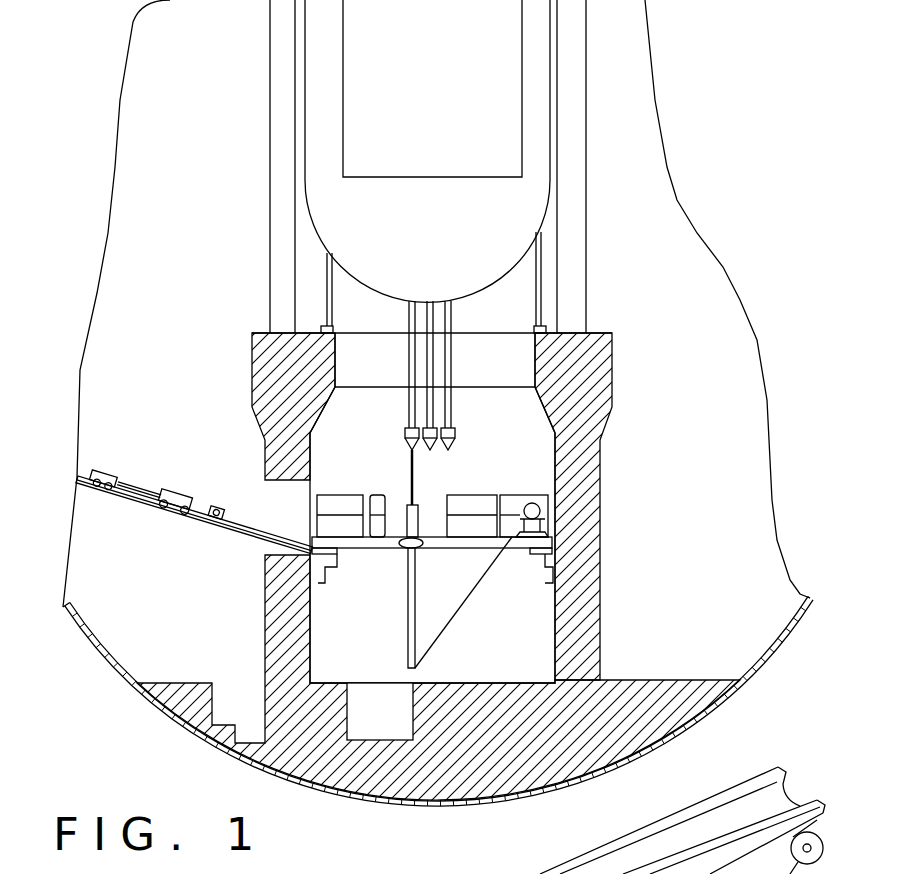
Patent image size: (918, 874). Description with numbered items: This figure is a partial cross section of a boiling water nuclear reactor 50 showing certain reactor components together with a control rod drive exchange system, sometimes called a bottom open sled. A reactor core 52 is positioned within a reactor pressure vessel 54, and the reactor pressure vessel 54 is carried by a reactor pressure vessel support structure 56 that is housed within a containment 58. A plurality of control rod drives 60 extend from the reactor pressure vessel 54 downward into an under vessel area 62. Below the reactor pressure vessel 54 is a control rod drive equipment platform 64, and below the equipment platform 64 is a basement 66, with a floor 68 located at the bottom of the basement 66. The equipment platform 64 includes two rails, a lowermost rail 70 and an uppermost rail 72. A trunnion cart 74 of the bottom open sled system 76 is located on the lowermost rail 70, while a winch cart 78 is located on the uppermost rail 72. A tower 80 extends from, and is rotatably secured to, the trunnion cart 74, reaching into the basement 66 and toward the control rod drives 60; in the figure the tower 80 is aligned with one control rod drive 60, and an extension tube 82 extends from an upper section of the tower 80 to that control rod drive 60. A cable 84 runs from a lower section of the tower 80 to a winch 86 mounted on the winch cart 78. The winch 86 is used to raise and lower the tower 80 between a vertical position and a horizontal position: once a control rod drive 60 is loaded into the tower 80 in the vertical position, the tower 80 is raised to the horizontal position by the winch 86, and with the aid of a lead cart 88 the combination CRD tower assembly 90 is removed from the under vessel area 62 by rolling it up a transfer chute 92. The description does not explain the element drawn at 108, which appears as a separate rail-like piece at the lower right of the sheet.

The boiling water nuclear reactor 50 is at (90, 668).
The reactor core 52 is at (447, 103).
The reactor pressure vessel 54 is at (443, 243).
The reactor pressure vessel support structure 56 is at (613, 367).
The containment 58 is at (770, 653).
The control rod drives 60 is at (448, 410).
The under vessel area 62 is at (365, 437).
The control rod drive equipment platform 64 is at (513, 563).
The basement 66 is at (432, 610).
The floor 68 is at (483, 683).
The lowermost rail 70 is at (437, 550).
The uppermost rail 72 is at (478, 507).
The trunnion cart 74 is at (402, 550).
The bottom open sled system 76 is at (430, 505).
The winch cart 78 is at (548, 513).
The tower 80 is at (407, 617).
The extension tube 82 is at (412, 482).
The cable 84 is at (470, 592).
The winch 86 is at (532, 503).
The lead cart 88 is at (98, 470).
The combination CRD tower assembly 90 is at (133, 515).
The transfer chute 92 is at (190, 523).
The transport rail 108 is at (515, 873).